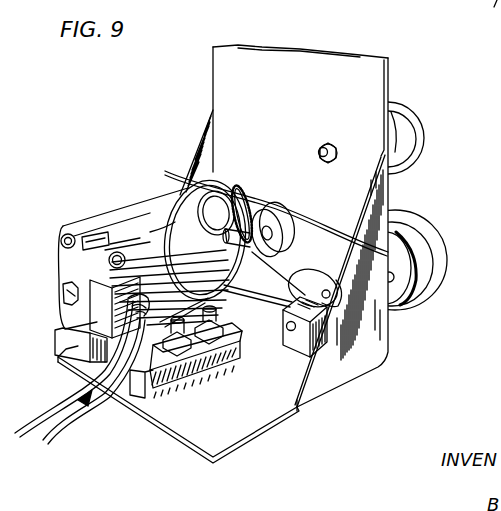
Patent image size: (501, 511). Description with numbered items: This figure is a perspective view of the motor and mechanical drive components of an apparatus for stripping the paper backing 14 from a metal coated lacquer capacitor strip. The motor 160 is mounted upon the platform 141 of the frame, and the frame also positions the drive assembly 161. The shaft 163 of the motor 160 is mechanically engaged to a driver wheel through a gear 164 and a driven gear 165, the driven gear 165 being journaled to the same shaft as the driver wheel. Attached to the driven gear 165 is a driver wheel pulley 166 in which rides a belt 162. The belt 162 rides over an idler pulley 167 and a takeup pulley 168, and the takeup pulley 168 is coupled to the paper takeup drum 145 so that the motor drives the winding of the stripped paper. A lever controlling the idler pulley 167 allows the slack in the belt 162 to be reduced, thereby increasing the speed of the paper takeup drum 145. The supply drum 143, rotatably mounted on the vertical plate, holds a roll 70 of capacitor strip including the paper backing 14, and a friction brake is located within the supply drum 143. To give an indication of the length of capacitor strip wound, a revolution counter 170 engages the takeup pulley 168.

The drive assembly 161 is at (332, 85).
The platform 141 is at (226, 421).
The motor 160 is at (79, 224).
The driver wheel pulley 166 is at (190, 192).
The driven gear 165 is at (241, 190).
The shaft 163 is at (249, 250).
The gear 164 is at (246, 205).
The idler pulley 167 is at (288, 231).
The belt 162 is at (314, 240).
The roll 70 is at (393, 110).
The supply drum 143 is at (421, 132).
The paper backing 14 is at (393, 212).
The paper takeup drum 145 is at (448, 254).
The takeup pulley 168 is at (325, 293).
The revolution counter 170 is at (302, 337).